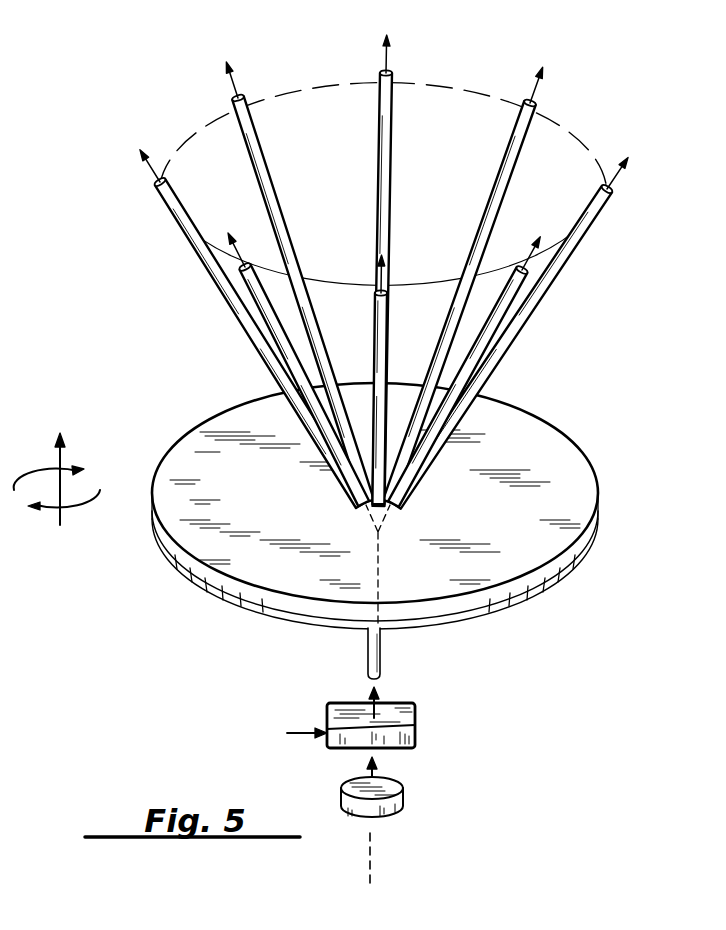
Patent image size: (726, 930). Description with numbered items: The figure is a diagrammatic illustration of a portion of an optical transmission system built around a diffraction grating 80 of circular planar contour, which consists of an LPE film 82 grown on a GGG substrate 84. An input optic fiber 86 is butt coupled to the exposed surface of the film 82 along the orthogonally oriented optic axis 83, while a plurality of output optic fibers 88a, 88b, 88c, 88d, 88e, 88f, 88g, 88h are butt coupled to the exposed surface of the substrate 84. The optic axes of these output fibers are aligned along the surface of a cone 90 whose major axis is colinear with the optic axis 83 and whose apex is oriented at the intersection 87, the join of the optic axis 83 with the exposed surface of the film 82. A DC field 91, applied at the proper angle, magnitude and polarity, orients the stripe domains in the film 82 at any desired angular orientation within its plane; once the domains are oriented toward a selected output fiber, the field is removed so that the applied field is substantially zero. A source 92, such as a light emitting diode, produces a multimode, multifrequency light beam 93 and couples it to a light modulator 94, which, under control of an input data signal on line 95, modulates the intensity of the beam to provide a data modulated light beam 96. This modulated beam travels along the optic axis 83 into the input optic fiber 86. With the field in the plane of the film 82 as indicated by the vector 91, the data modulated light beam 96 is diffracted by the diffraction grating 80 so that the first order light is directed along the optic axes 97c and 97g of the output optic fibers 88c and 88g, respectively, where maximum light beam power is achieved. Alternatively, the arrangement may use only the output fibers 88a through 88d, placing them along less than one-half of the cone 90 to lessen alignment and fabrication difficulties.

The diffraction grating 80 is at (387, 357).
The LPE film 82 is at (528, 607).
The optic axis 83 is at (372, 850).
The GGG substrate 84 is at (543, 431).
The input optic fiber 86 is at (382, 653).
The intersection 87 is at (381, 532).
The output optic fiber 88a is at (392, 120).
The output optic fiber 88b is at (519, 158).
The output optic fiber 88c is at (569, 262).
The output optic fiber 88d is at (503, 327).
The output optic fiber 88e is at (388, 340).
The output optic fiber 88f is at (268, 325).
The output optic fiber 88g is at (192, 244).
The output optic fiber 88h is at (262, 145).
The cone 90 is at (436, 73).
The DC field 91 is at (62, 462).
The source 92 is at (403, 793).
The light beam 93 is at (364, 771).
The light modulator 94 is at (416, 717).
The line 95 is at (305, 730).
The data modulated light beam 96 is at (380, 702).
The optic axis 97c is at (620, 180).
The optic axis 97g is at (150, 166).